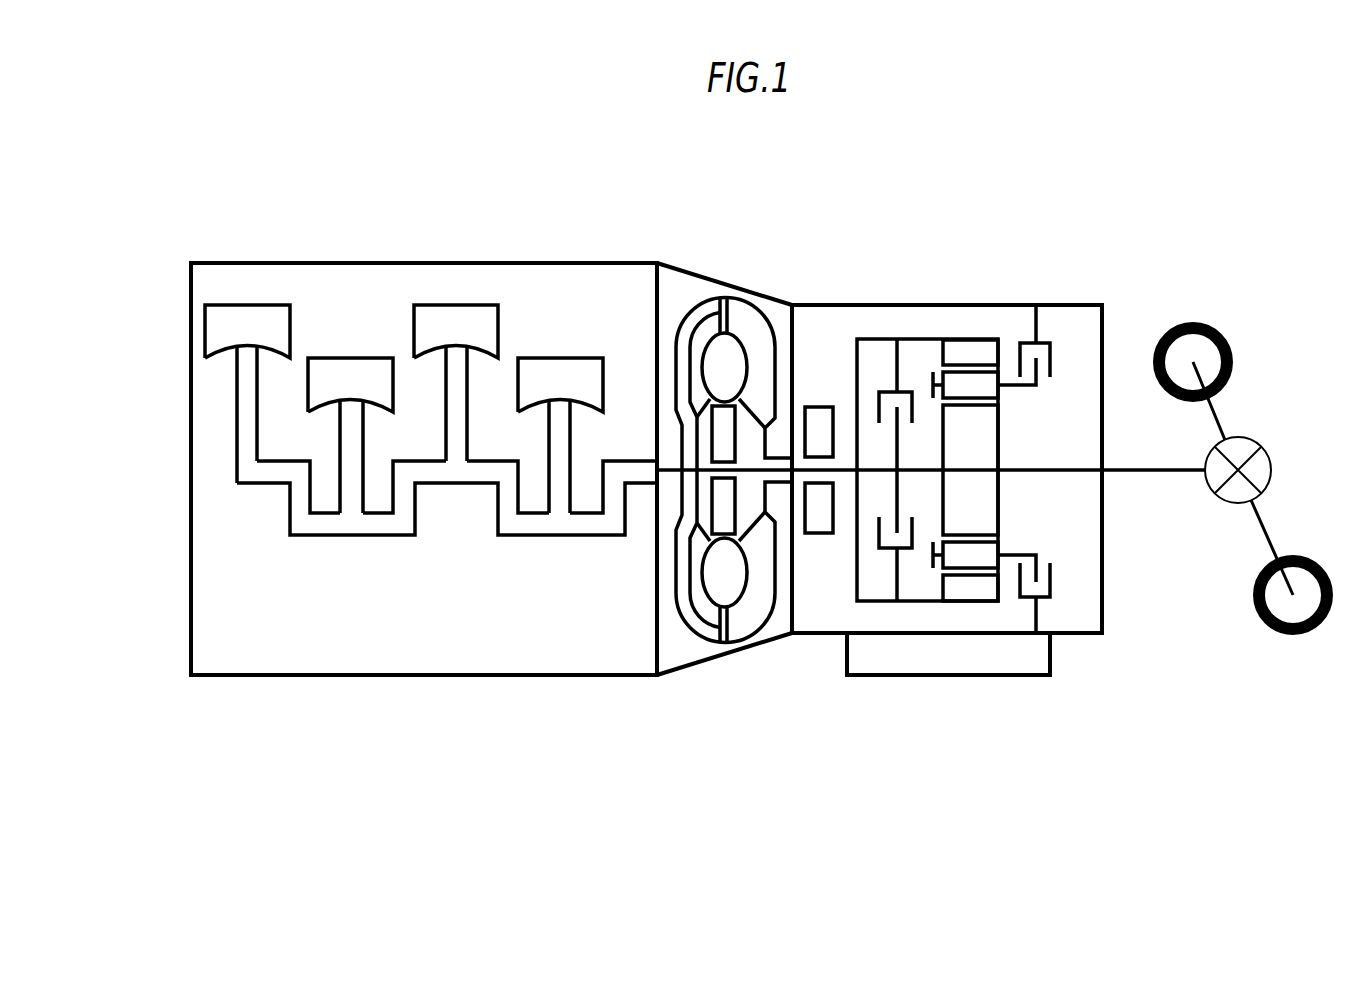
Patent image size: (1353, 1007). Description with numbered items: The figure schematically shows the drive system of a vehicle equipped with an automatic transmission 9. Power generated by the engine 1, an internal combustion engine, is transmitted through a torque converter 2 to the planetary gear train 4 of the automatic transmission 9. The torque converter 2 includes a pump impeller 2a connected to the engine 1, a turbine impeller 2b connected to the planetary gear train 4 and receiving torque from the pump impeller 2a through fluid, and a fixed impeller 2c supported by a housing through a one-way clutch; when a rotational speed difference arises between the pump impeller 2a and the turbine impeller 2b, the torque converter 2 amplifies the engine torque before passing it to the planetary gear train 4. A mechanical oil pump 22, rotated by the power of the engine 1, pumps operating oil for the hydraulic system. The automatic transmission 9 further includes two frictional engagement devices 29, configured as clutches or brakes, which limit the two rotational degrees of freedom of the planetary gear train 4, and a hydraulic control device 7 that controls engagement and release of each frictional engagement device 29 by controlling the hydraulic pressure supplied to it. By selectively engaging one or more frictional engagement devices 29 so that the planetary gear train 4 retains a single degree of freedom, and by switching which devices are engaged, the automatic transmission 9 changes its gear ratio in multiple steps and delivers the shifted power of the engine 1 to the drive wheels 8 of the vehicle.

The engine 1 is at (300, 263).
The torque converter 2 is at (743, 488).
The pump impeller 2a is at (763, 610).
The turbine impeller 2b is at (697, 612).
The fixed impeller 2c is at (723, 520).
The mechanical oil pump 22 is at (818, 405).
The frictional engagement device 29 is at (905, 392).
The planetary gear train 4 is at (968, 340).
The hydraulic control device 7 is at (1053, 648).
The drive wheels 8 is at (1210, 326).
The automatic transmission 9 is at (948, 712).